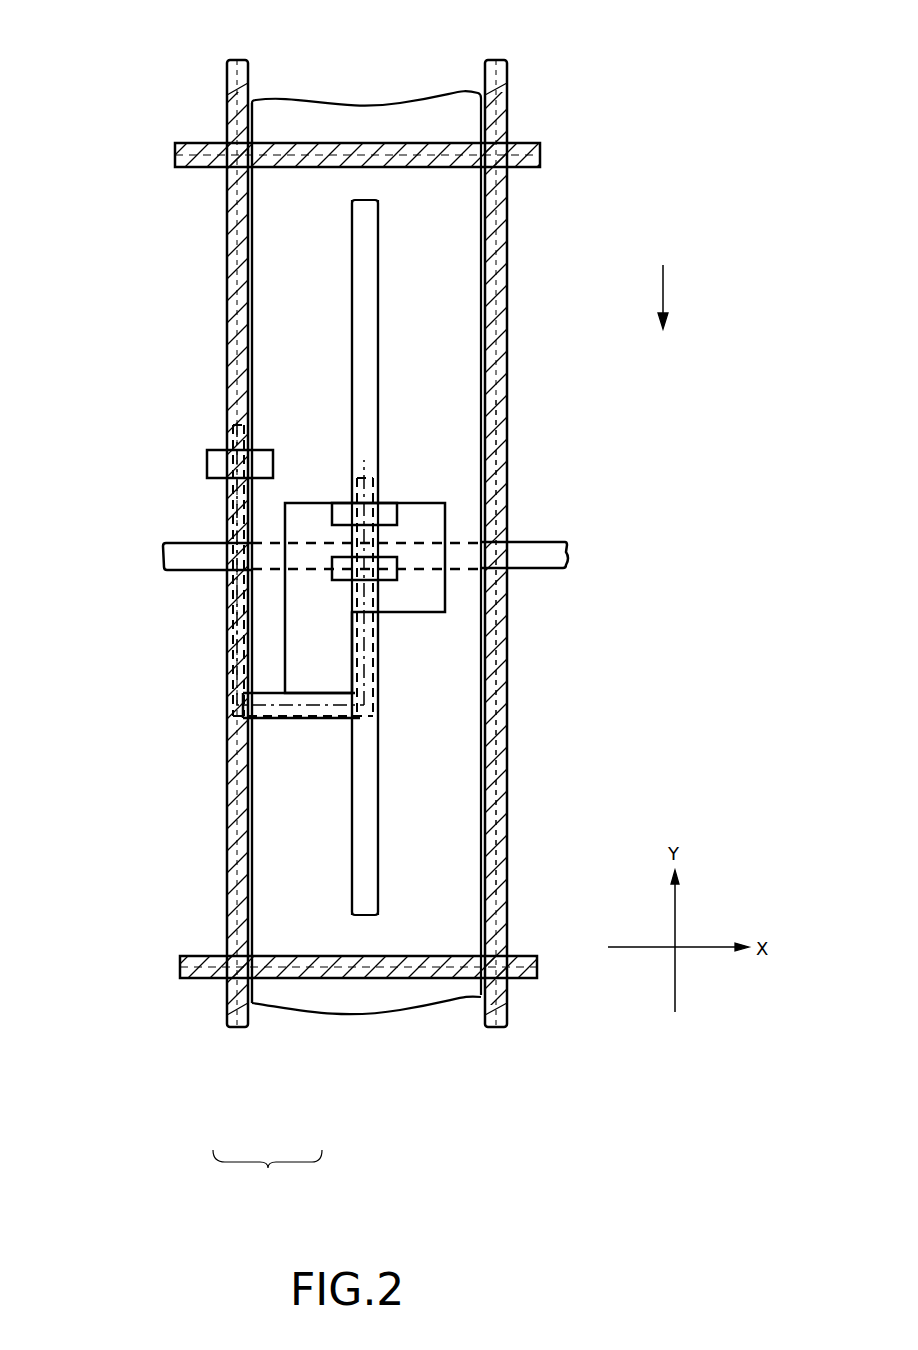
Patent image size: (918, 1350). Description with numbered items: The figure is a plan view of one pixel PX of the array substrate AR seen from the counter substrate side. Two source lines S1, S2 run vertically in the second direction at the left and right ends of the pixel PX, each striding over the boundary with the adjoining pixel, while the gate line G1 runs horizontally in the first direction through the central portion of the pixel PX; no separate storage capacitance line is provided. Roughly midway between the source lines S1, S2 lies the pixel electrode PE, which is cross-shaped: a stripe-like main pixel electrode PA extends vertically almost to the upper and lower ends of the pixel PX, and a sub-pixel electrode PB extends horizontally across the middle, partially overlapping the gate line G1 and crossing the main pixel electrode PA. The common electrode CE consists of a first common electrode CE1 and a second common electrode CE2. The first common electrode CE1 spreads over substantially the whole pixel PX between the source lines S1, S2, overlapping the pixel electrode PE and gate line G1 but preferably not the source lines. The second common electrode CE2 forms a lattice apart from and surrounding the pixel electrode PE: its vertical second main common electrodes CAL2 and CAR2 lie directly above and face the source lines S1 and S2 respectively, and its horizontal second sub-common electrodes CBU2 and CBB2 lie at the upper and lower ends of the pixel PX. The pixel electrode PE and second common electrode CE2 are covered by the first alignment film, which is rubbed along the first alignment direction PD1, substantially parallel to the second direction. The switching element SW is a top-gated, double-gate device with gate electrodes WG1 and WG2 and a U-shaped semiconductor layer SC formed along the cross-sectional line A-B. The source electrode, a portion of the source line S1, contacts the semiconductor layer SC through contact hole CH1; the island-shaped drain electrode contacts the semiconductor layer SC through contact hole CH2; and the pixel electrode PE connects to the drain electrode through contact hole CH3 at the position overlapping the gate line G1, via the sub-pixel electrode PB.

The source line S1 is at (236, 56).
The source line S2 is at (495, 56).
The second sub-common electrode CBU2 is at (329, 142).
The second sub-common electrode CBB2 is at (365, 979).
The common electrode CE is at (267, 1171).
The first common electrode CE1 is at (273, 1007).
The second common electrode CE2 is at (253, 1045).
The pixel electrode PE is at (382, 302).
The main pixel electrode PA is at (378, 400).
The sub-pixel electrode PB is at (317, 613).
The pixel PX is at (513, 142).
The array substrate AR is at (651, 153).
The first alignment direction PD1 is at (668, 290).
The contact hole CH1 is at (207, 451).
The contact hole CH2 is at (387, 507).
The contact hole CH3 is at (387, 581).
The gate line G1 is at (163, 560).
The gate electrode WG1 is at (212, 553).
The gate electrode WG2 is at (382, 542).
The second main common electrode CAL2 is at (227, 647).
The second main common electrode CAR2 is at (507, 638).
The switching element SW is at (298, 467).
The semiconductor layer SC is at (303, 724).
The cross-sectional line end A is at (237, 423).
The cross-sectional line end B is at (364, 460).